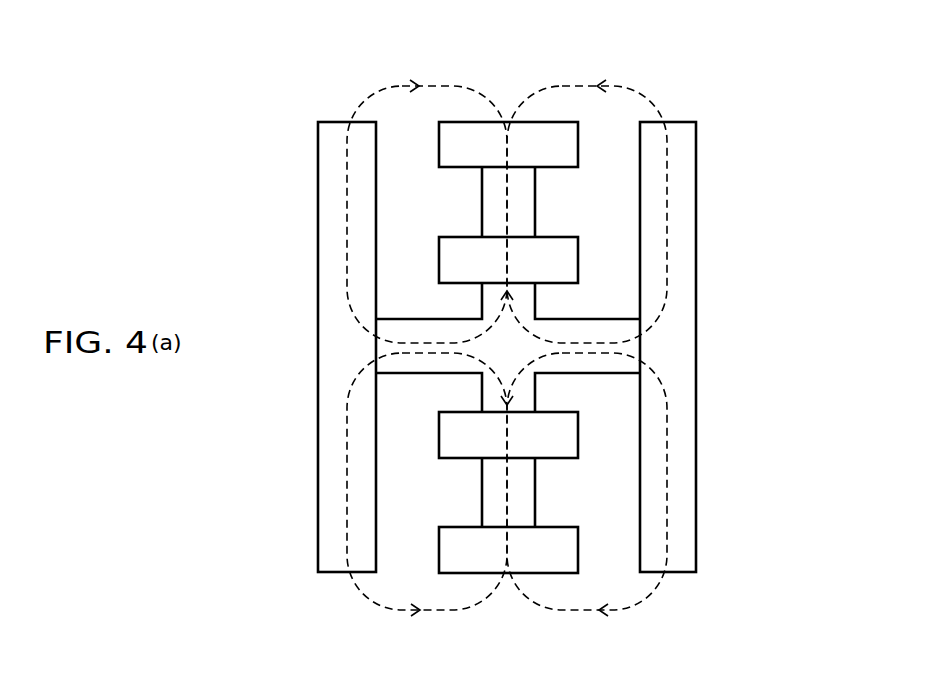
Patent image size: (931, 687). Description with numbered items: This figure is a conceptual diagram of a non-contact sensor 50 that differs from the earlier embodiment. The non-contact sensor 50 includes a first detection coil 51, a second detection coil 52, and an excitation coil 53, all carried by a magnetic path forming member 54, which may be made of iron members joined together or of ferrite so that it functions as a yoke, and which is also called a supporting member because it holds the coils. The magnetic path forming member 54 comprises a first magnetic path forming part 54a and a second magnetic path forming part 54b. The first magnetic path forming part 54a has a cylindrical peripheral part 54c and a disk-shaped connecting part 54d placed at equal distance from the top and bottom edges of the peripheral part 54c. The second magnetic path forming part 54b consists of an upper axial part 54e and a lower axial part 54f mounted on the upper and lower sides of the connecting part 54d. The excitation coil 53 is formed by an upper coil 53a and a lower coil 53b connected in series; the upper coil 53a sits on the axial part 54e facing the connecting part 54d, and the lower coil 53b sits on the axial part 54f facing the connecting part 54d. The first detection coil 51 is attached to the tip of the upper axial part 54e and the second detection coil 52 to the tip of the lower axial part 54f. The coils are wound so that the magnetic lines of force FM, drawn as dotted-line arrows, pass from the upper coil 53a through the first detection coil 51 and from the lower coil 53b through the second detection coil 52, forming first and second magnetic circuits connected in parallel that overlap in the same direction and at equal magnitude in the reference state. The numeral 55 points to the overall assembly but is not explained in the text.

The non-contact sensor 50 is at (508, 343).
The first detection coil 51 is at (553, 122).
The second detection coil 52 is at (551, 573).
The excitation coil 53 is at (770, 315).
The upper coil 53a is at (577, 258).
The lower coil 53b is at (577, 435).
The magnetic path forming member 54 is at (312, 259).
The first magnetic path forming part 54a is at (313, 167).
The second magnetic path forming part 54b is at (542, 493).
The peripheral part 54c is at (317, 350).
The connecting part 54d is at (410, 375).
The axial part 54e is at (482, 207).
The axial part 54f is at (482, 497).
The reactor 55 is at (745, 56).
The magnetic lines of force FM is at (447, 84).